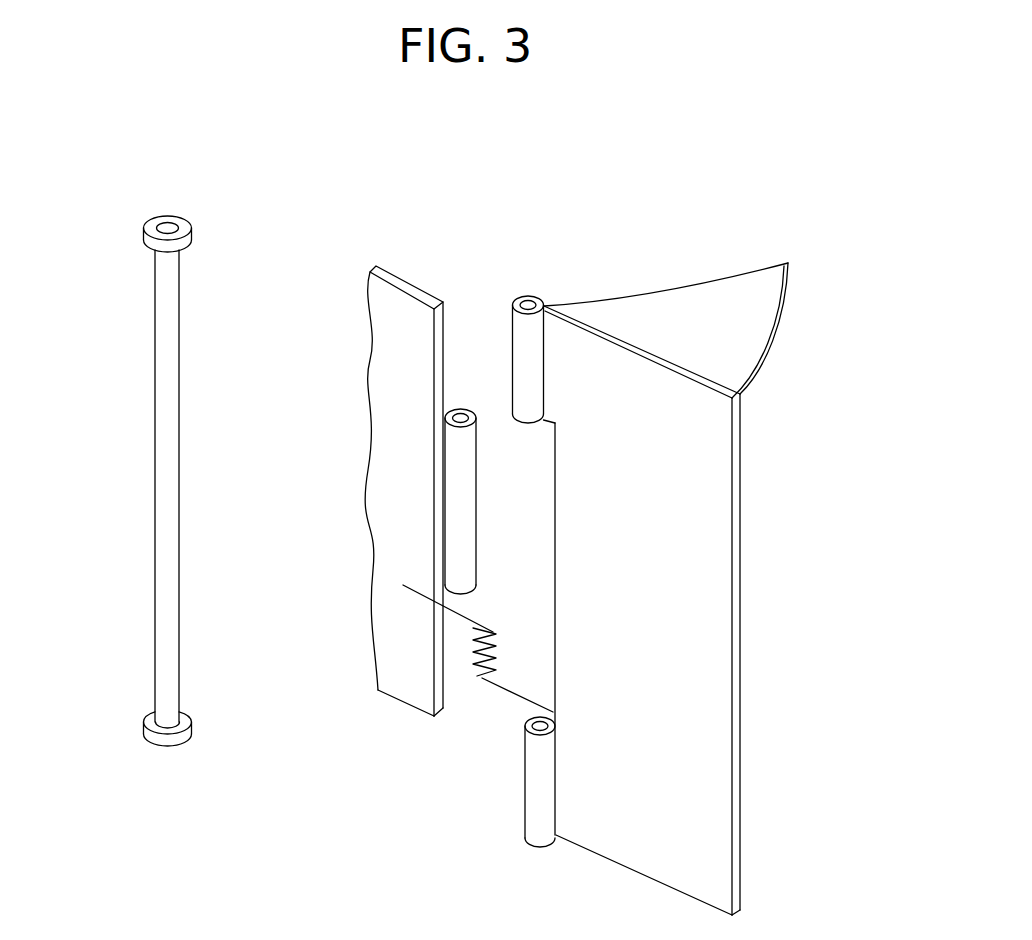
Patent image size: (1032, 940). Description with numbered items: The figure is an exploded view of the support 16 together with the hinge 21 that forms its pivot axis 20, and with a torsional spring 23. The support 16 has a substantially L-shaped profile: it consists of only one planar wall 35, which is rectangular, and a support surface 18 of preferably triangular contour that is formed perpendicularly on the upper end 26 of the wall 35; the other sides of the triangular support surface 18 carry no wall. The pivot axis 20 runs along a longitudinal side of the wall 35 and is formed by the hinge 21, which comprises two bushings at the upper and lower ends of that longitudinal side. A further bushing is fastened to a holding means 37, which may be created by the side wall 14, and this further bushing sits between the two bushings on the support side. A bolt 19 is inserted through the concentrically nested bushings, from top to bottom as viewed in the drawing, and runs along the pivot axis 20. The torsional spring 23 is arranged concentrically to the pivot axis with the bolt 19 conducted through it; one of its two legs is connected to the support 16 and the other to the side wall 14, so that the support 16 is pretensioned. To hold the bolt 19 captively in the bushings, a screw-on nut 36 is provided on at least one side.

The side wall 14 is at (415, 516).
The support 16 is at (792, 633).
The support surface 18 is at (733, 333).
The bolt 19 is at (163, 405).
The pivot axis 20 is at (528, 278).
The hinge 21 is at (572, 287).
The torsional spring 23 is at (481, 678).
The upper end 26 is at (680, 407).
The wall 35 is at (692, 632).
The screw-on nut 36 is at (160, 750).
The holding means 37 is at (403, 683).